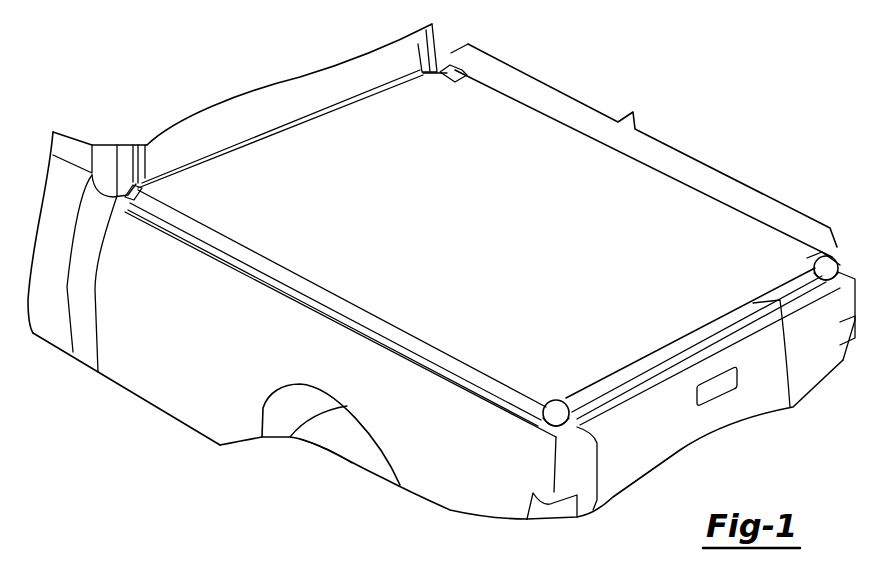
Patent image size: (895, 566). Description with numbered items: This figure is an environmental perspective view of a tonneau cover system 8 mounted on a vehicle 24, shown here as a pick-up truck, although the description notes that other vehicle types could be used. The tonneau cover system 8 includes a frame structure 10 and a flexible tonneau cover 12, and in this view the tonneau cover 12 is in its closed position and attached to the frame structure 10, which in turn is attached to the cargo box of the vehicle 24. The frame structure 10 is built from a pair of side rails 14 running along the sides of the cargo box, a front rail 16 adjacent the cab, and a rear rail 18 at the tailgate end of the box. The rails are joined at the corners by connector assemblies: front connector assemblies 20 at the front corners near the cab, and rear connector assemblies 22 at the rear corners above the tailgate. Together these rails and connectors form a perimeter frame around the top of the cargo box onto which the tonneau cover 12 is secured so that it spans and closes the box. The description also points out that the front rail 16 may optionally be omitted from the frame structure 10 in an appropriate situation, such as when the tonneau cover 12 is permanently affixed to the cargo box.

The tonneau cover system 8 is at (668, 59).
The frame structure 10 is at (644, 150).
The tonneau cover 12 is at (438, 190).
The side rails 14 is at (288, 295).
The front rail 16 is at (307, 116).
The rear rail 18 is at (790, 410).
The front connector assemblies 20 is at (90, 177).
The rear connector assemblies 22 is at (556, 412).
The vehicle 24 is at (213, 128).